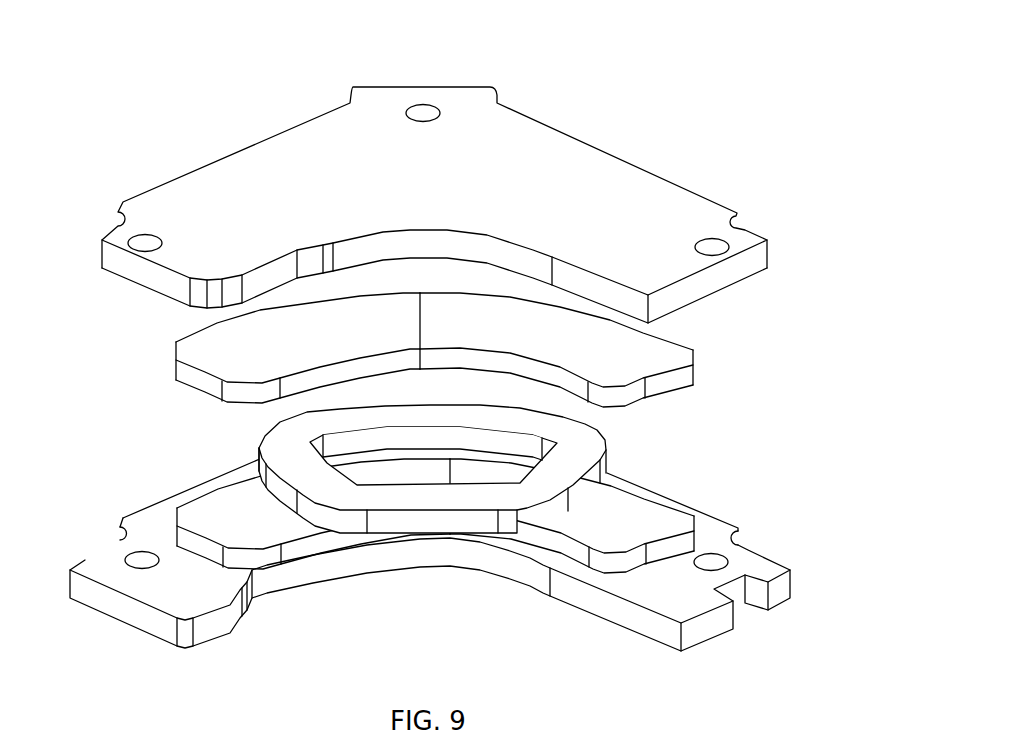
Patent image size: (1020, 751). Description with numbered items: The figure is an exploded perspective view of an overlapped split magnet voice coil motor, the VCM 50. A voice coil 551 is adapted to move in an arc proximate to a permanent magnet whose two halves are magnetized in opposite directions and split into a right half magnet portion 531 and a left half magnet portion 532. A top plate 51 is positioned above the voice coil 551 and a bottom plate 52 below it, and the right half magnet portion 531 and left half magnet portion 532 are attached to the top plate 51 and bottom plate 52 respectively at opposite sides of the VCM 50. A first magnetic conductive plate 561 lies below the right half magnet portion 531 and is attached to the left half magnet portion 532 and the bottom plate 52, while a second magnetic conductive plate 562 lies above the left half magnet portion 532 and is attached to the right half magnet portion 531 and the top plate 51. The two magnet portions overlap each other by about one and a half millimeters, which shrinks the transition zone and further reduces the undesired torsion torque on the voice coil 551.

The VCM 50 is at (662, 80).
The top plate 51 is at (695, 214).
The bottom plate 52 is at (697, 578).
The right half magnet portion 531 is at (648, 363).
The first magnetic conductive plate 561 is at (200, 350).
The voice coil 551 is at (587, 443).
The left half magnet portion 532 is at (200, 527).
The second magnetic conductive plate 562 is at (650, 525).